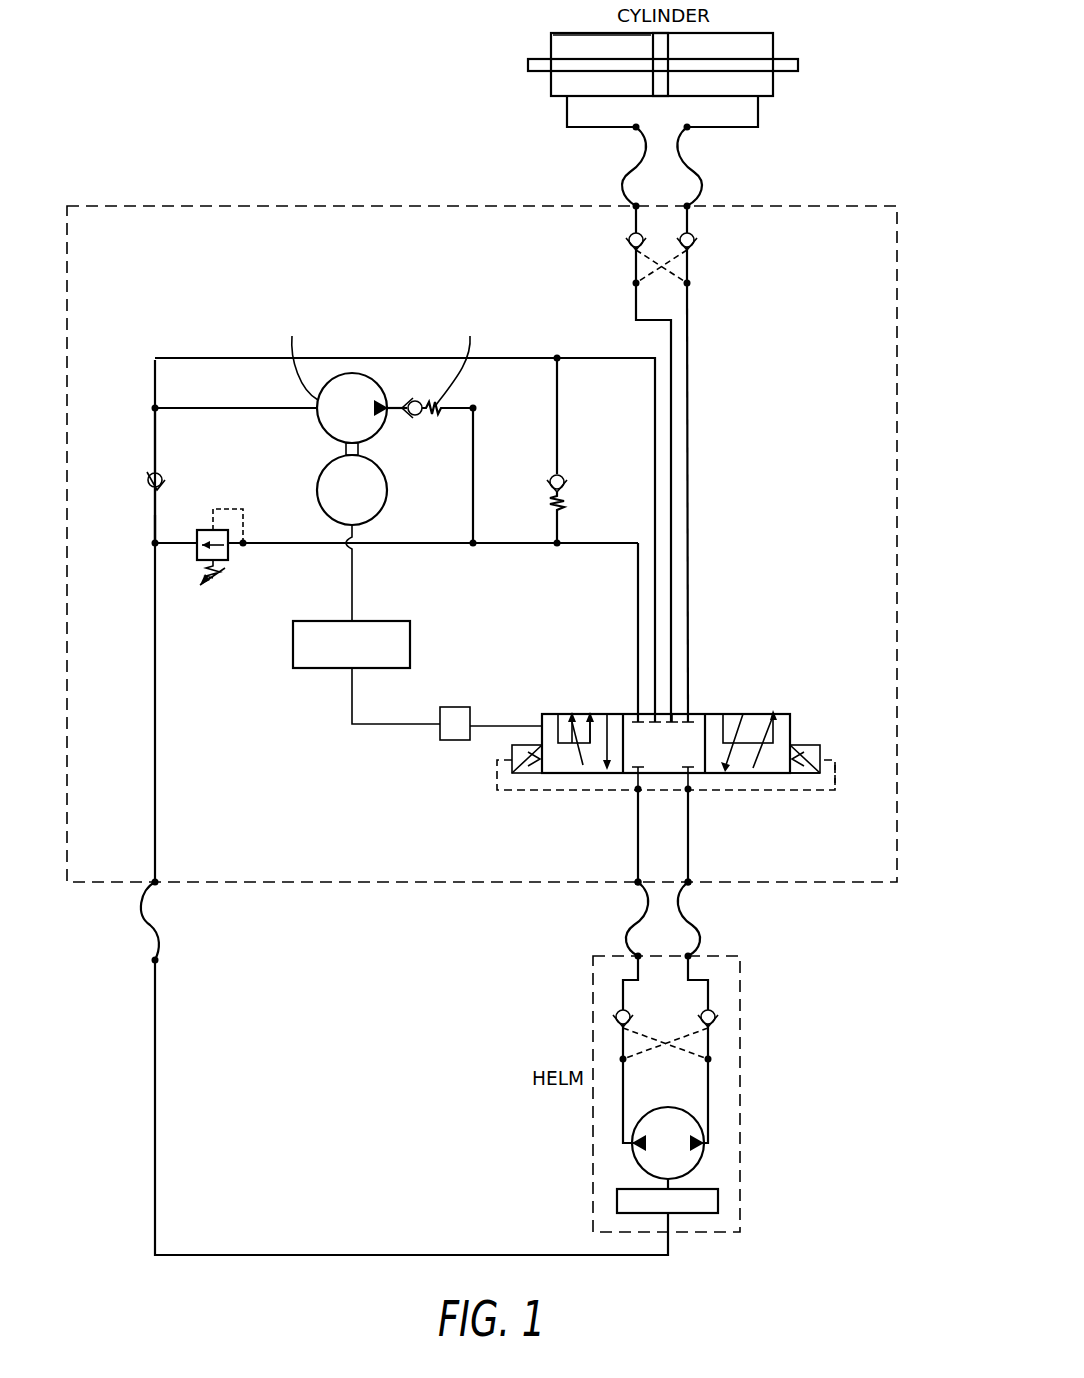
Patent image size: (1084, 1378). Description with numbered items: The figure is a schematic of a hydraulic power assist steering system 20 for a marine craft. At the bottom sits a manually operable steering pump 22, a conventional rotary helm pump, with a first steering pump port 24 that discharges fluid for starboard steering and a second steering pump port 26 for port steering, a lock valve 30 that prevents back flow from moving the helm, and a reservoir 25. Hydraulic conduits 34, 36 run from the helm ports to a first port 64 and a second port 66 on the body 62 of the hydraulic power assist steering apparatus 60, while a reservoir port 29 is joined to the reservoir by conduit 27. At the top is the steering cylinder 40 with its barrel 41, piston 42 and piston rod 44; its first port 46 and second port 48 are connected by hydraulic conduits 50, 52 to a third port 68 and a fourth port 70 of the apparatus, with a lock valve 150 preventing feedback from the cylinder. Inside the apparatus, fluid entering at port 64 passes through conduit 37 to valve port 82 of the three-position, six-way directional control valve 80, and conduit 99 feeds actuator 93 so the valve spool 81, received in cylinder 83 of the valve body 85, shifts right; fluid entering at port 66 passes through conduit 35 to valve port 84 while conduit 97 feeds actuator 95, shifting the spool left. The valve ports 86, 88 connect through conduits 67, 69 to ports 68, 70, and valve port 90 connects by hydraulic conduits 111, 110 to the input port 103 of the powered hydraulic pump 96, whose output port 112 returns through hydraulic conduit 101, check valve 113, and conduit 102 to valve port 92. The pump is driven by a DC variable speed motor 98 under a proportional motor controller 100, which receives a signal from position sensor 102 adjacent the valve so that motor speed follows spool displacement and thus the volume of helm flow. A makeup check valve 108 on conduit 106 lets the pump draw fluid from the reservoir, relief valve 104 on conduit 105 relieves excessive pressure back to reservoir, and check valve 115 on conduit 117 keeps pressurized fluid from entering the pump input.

The hydraulic power assist steering system 20 is at (770, 948).
The steering pump 22 is at (678, 1125).
The first steering pump port 24 is at (632, 1148).
The reservoir 25 is at (690, 1200).
The second steering pump port 26 is at (705, 1148).
The conduit 27 is at (158, 1143).
The reservoir port 29 is at (162, 890).
The lock valve 30 is at (625, 1042).
The hydraulic conduit 34 is at (632, 930).
The conduit 35 is at (690, 848).
The hydraulic conduit 36 is at (692, 930).
The conduit 37 is at (636, 848).
The steering cylinder 40 is at (775, 40).
The barrel 41 is at (548, 42).
The piston 42 is at (660, 64).
The piston rod 44 is at (798, 65).
The first port 46 is at (567, 100).
The second port 48 is at (758, 100).
The hydraulic conduit 50 is at (628, 145).
The hydraulic conduit 52 is at (692, 180).
The hydraulic power assist steering apparatus 60 is at (338, 890).
The body 62 is at (850, 462).
The first port 64 is at (642, 892).
The second port 66 is at (695, 888).
The conduit 67 is at (673, 468).
The third port 68 is at (628, 215).
The conduit 69 is at (690, 513).
The fourth port 70 is at (694, 215).
The directional control valve 80 is at (782, 720).
The valve spool 81 is at (583, 760).
The valve port 82 is at (636, 776).
The cylinder 83 is at (745, 776).
The valve port 84 is at (684, 776).
The body 85 is at (790, 776).
The valve port 86 is at (673, 712).
The valve port 88 is at (692, 712).
The valve port 90 is at (655, 712).
The valve port 92 is at (633, 712).
The actuator 93 is at (520, 750).
The actuator 95 is at (810, 755).
The powered hydraulic pump 96 is at (352, 375).
The conduit 97 is at (836, 768).
The motor 98 is at (388, 490).
The conduit 99 is at (522, 790).
The motor controller 100 is at (412, 645).
The hydraulic conduit 101 is at (476, 455).
The position sensor 102 is at (636, 570).
The input port 103 is at (295, 354).
The relief valve 104 is at (205, 530).
The conduit 105 is at (285, 545).
The conduit 106 is at (152, 515).
The check valve 108 is at (148, 472).
The hydraulic conduit 110 is at (240, 405).
The hydraulic conduit 111 is at (657, 425).
The output port 112 is at (412, 400).
The check valve 113 is at (462, 356).
The check valve 115 is at (565, 480).
The conduit 117 is at (560, 420).
The lock valve 150 is at (690, 262).